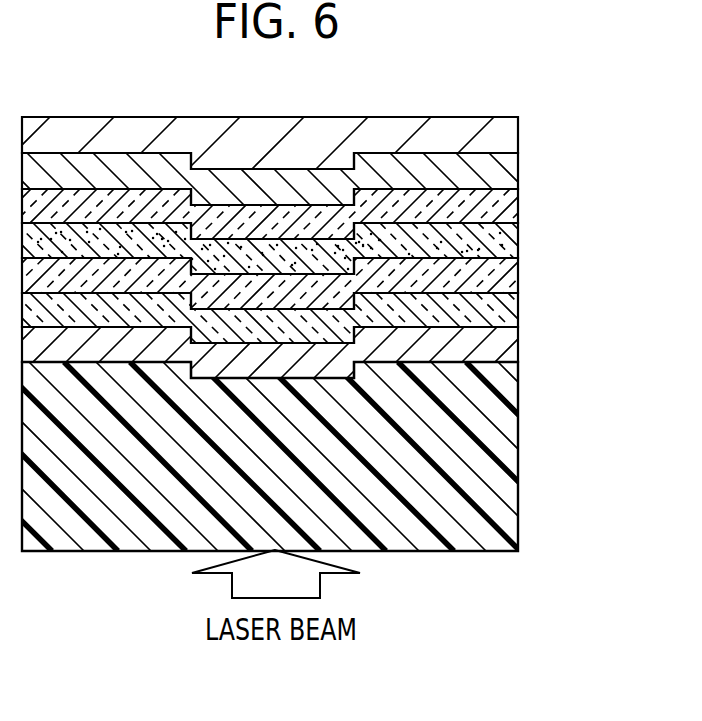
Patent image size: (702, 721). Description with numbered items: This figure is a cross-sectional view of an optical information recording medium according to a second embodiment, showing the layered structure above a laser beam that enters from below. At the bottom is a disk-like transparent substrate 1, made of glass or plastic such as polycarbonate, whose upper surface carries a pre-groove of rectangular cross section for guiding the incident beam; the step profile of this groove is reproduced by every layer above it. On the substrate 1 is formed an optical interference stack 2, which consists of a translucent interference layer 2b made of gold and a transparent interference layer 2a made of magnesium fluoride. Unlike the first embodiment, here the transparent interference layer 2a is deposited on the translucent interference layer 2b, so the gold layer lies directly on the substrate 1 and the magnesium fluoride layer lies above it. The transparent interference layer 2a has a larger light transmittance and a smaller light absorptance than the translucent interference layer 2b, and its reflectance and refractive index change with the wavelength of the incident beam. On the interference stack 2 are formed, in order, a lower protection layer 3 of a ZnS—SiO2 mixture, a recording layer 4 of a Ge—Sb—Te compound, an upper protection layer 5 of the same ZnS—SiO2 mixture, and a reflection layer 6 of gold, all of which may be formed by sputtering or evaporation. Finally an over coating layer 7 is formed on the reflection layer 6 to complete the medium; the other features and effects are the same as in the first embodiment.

The transparent substrate 1 is at (509, 455).
The optical interference stack 2 is at (622, 300).
The transparent interference layer 2a is at (509, 305).
The translucent interference layer 2b is at (509, 338).
The lower protection layer 3 is at (509, 271).
The recording layer 4 is at (509, 237).
The upper protection layer 5 is at (509, 203).
The reflection layer 6 is at (509, 169).
The over coating layer 7 is at (509, 133).